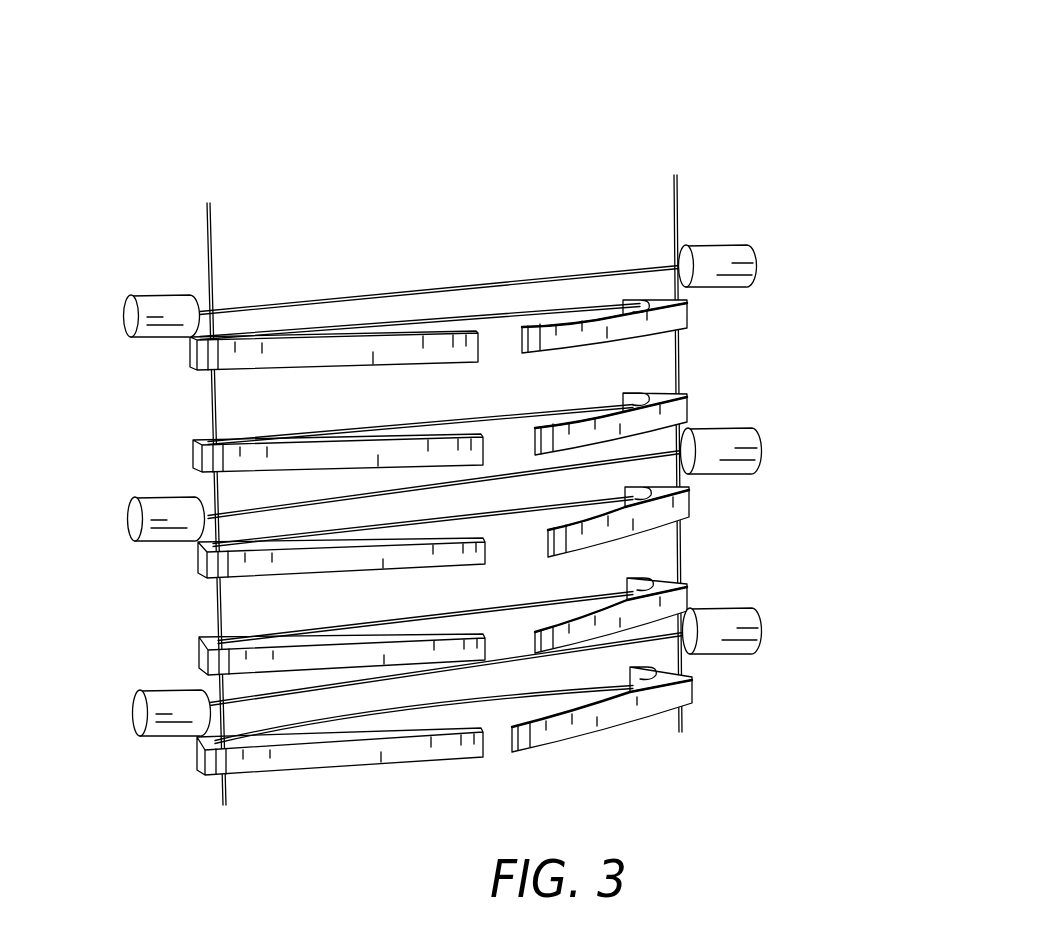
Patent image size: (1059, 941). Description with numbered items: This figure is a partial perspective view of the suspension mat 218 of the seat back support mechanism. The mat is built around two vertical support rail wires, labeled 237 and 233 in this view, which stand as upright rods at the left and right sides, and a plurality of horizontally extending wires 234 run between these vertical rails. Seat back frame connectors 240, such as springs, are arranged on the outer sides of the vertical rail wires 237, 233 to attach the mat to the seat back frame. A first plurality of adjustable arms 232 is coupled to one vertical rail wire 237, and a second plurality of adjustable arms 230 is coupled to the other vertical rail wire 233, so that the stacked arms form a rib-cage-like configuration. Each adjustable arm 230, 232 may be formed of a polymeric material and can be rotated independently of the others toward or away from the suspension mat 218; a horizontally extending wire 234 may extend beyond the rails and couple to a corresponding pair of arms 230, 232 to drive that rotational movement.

The suspension mat 218 is at (800, 88).
The left support rod 237 is at (210, 215).
The right support rod 233 is at (677, 196).
The adjustable arms 232 is at (190, 352).
The adjustable arms 230 is at (690, 318).
The horizontally extending wires 234 is at (462, 318).
The seat back frame connectors 240 is at (124, 318).